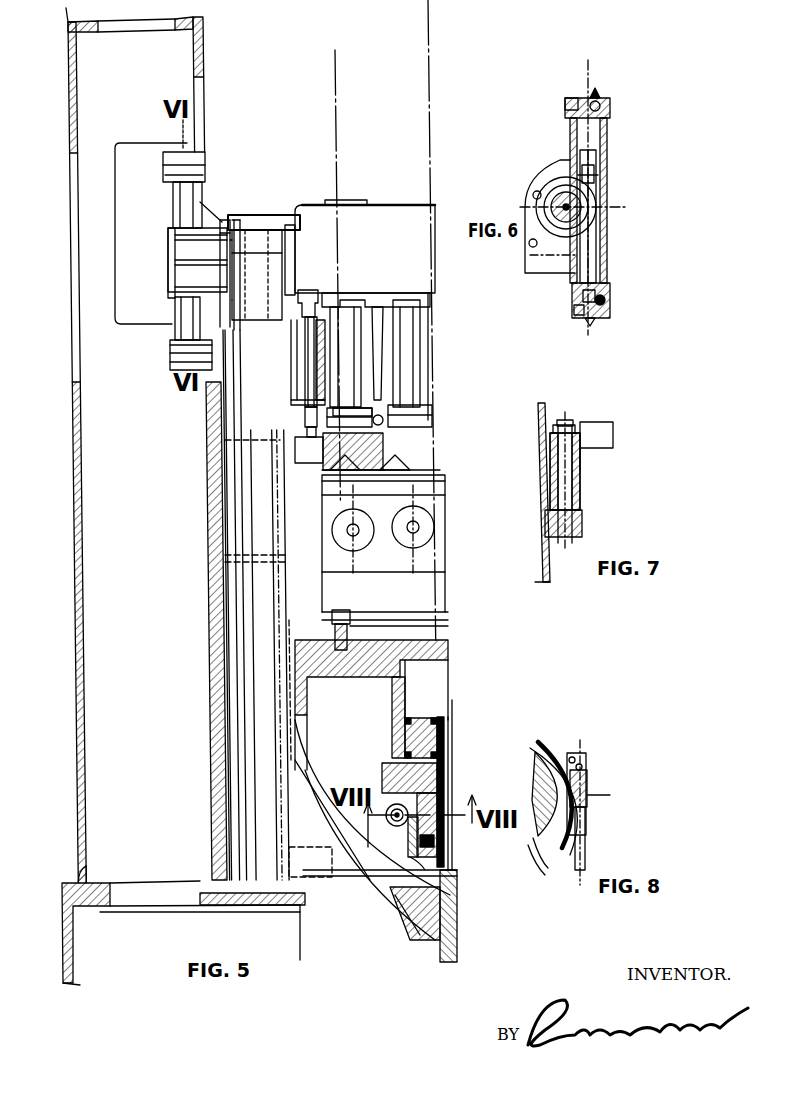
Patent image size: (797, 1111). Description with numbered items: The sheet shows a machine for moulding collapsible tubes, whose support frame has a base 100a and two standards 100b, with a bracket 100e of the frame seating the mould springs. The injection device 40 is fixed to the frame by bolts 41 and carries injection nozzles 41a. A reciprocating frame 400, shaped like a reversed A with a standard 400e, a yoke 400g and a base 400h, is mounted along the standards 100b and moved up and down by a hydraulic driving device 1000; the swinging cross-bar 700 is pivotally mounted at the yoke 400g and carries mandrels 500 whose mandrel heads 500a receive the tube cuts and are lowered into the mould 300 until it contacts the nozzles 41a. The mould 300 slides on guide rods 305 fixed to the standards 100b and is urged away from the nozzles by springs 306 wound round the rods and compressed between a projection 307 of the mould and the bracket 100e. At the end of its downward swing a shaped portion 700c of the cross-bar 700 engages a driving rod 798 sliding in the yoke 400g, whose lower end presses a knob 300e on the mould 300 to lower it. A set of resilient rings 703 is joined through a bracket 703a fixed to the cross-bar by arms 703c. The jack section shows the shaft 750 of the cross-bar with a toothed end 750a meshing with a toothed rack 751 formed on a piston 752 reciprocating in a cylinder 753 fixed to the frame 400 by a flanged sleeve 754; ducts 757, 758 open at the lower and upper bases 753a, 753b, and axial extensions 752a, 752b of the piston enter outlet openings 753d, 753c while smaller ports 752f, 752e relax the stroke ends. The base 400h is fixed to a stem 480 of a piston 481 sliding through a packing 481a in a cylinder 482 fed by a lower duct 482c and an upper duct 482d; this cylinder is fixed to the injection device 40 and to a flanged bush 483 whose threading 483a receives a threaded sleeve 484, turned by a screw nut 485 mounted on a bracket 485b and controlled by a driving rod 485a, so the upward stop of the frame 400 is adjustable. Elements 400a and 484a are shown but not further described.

In FIG. 5, the base 100a is at (74, 942).
In FIG. 5, the standards 100b is at (76, 676).
In FIG. 7, the bracket 100e is at (585, 524).
In FIG. 7, the mould 300 is at (617, 428).
In FIG. 5, the knob 300e is at (230, 440).
In FIG. 7, the guide rods 305 is at (563, 420).
In FIG. 7, the springs 306 is at (582, 494).
In FIG. 7, the projection 307 is at (596, 430).
In FIG. 5, the injection device 40 is at (447, 512).
In FIG. 5, the bolts 41 is at (352, 623).
In FIG. 5, the injection nozzles 41a is at (385, 462).
In FIG. 5, the reciprocating frame 400 is at (340, 880).
In FIG. 5, the carriage cylinder 400a is at (262, 215).
In FIG. 5, the standard 400e is at (258, 592).
In FIG. 5, the yoke 400g is at (235, 410).
In FIG. 5, the base 400h is at (408, 935).
In FIG. 5, the stem 480 is at (446, 858).
In FIG. 5, the piston 481 is at (426, 738).
In FIG. 5, the packing 481a is at (415, 720).
In FIG. 5, the cylinder 482 is at (403, 692).
In FIG. 5, the duct 482c is at (393, 760).
In FIG. 5, the duct 482d is at (395, 688).
In FIG. 5, the flanged bush 483 is at (430, 802).
In FIG. 8, the flanged bush 483 is at (540, 860).
In FIG. 5, the threading 483a is at (420, 830).
In FIG. 5, the threaded sleeve 484 is at (420, 868).
In FIG. 8, the threaded sleeve 484 is at (540, 748).
In FIG. 5, the arc member liner 484a is at (412, 845).
In FIG. 8, the arc member liner 484a is at (555, 758).
In FIG. 5, the screw nut 485 is at (390, 824).
In FIG. 8, the screw nut 485 is at (588, 790).
In FIG. 8, the driving rod 485a is at (586, 850).
In FIG. 5, the bracket 485b is at (425, 780).
In FIG. 8, the bracket 485b is at (587, 795).
In FIG. 5, the pressing unit 500 is at (322, 362).
In FIG. 5, the mandrel heads 500a is at (385, 440).
In FIG. 5, the swinging cross-bar 700 is at (368, 225).
In FIG. 5, the shaped portion 700c is at (310, 290).
In FIG. 5, the set of resilient rings 703 is at (400, 412).
In FIG. 5, the bracket 703a is at (422, 412).
In FIG. 5, the arms 703c is at (380, 320).
In FIG. 6, the shaft 750 is at (560, 200).
In FIG. 6, the toothed end 750a is at (566, 190).
In FIG. 6, the toothed rack 751 is at (595, 250).
In FIG. 6, the piston 752 is at (598, 212).
In FIG. 6, the axial extension 752a is at (572, 305).
In FIG. 6, the axial extension 752b is at (600, 168).
In FIG. 6, the port 752e is at (608, 108).
In FIG. 6, the port 752f is at (598, 298).
In FIG. 6, the cylinder 753 is at (609, 140).
In FIG. 6, the lower base 753a is at (592, 322).
In FIG. 6, the upper base 753b is at (599, 102).
In FIG. 6, the outlet opening 753c is at (596, 88).
In FIG. 6, the outlet opening 753d is at (605, 303).
In FIG. 6, the flanged sleeve 754 is at (535, 205).
In FIG. 6, the duct 757 is at (578, 318).
In FIG. 6, the duct 758 is at (568, 96).
In FIG. 5, the driving rod 798 is at (313, 340).
In FIG. 5, the hydraulic driving device 1000 is at (452, 762).